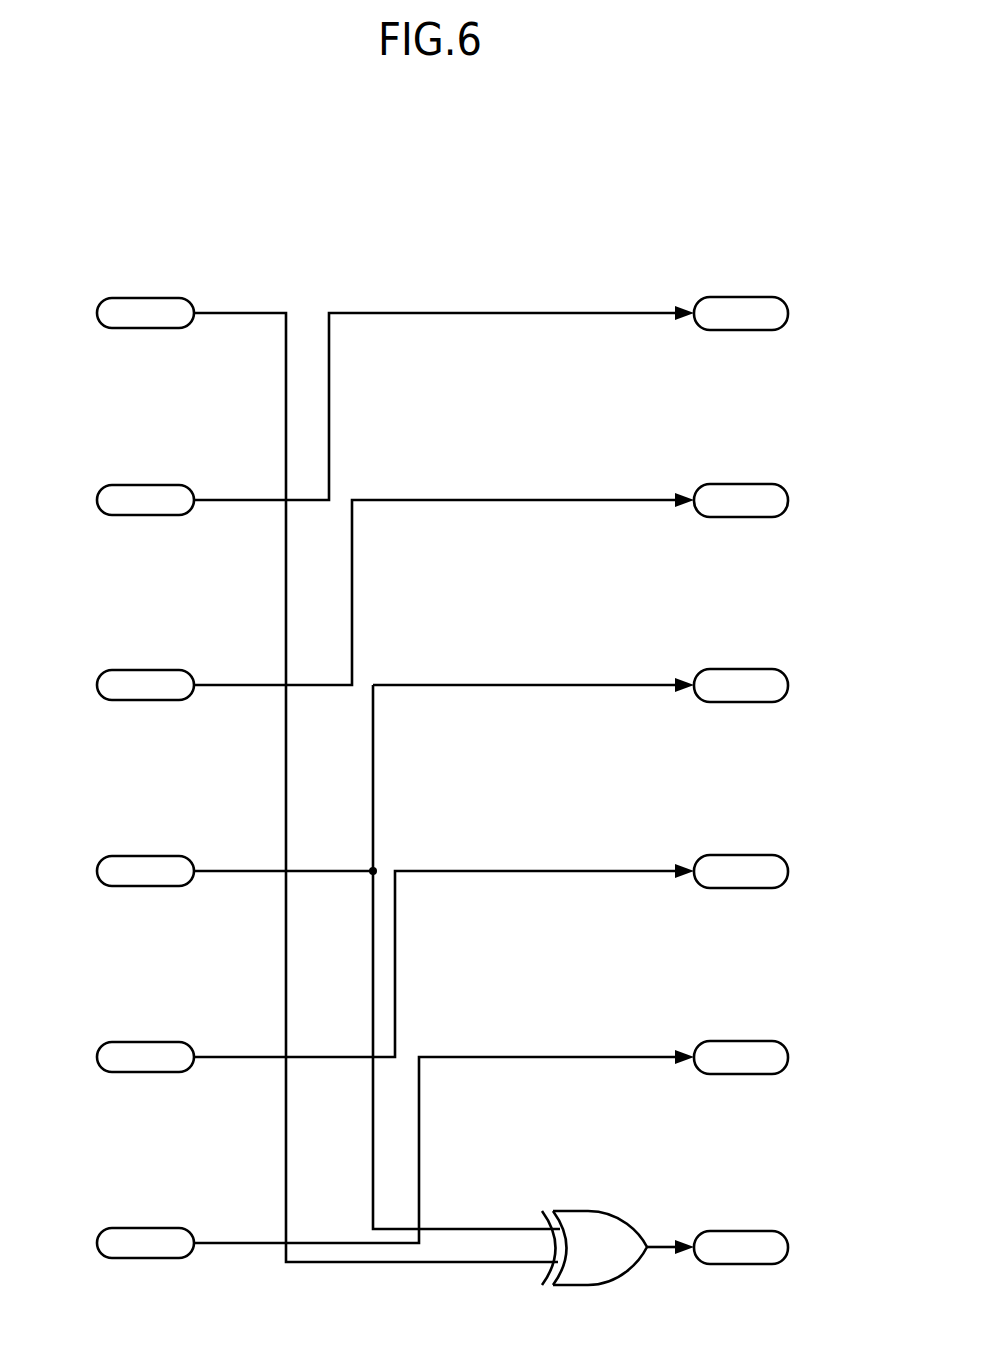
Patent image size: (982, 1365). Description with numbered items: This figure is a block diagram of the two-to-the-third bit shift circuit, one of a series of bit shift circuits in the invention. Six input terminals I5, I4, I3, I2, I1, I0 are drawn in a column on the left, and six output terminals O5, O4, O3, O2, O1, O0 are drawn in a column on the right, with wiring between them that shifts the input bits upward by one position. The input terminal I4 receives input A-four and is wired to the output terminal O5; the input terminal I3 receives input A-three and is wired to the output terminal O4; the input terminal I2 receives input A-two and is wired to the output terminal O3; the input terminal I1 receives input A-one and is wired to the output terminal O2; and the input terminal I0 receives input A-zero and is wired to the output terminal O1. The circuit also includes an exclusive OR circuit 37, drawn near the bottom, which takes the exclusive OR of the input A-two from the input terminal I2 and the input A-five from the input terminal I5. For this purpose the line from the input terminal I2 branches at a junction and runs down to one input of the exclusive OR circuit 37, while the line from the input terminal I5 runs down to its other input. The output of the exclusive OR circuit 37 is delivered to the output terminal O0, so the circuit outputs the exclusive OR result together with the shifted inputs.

The exclusive OR circuit 37 is at (603, 1230).
The input terminal I5 is at (112, 322).
The input terminal I4 is at (112, 509).
The input terminal I3 is at (112, 694).
The input terminal I2 is at (112, 880).
The input terminal I1 is at (112, 1066).
The input terminal I0 is at (112, 1252).
The output terminal O5 is at (775, 309).
The output terminal O4 is at (775, 496).
The output terminal O3 is at (775, 681).
The output terminal O2 is at (775, 867).
The output terminal O1 is at (775, 1053).
The output terminal O0 is at (775, 1243).